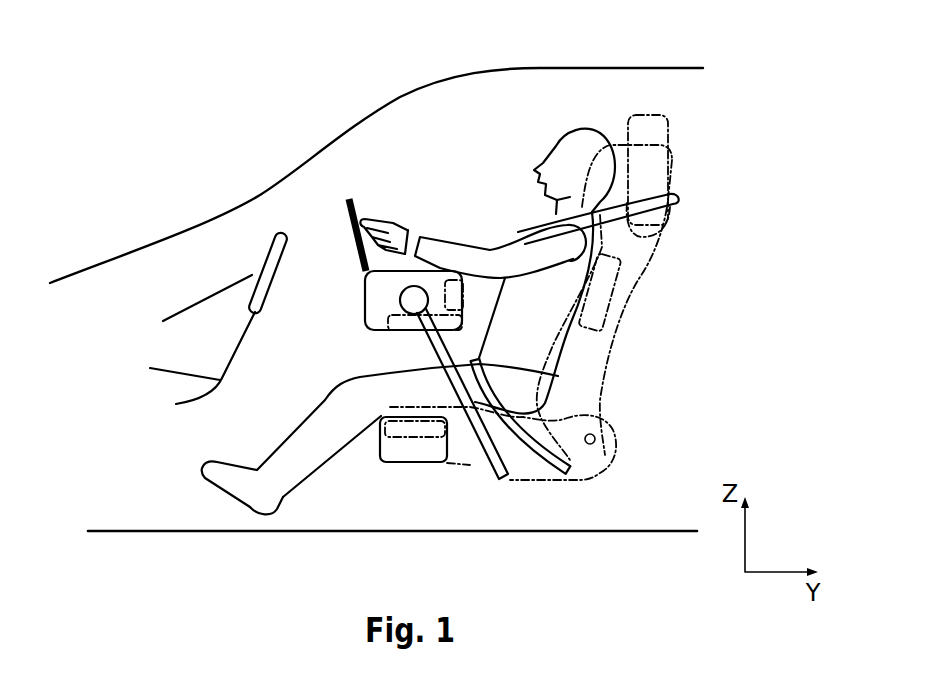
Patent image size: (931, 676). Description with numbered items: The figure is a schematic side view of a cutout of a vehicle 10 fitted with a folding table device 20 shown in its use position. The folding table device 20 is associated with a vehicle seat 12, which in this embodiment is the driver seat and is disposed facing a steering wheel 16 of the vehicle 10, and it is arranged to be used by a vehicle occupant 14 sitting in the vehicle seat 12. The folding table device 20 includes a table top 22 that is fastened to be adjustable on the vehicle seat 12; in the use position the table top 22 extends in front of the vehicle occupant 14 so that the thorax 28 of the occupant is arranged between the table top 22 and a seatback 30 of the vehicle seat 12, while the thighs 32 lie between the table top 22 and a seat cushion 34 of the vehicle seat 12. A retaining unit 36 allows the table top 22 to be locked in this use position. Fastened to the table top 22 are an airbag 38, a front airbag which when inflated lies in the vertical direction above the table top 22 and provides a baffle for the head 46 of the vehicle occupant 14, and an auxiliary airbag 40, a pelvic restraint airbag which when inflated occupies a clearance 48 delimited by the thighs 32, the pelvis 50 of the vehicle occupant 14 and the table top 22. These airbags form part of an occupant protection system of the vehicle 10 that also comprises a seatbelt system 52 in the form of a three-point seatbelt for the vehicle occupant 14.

The vehicle 10 is at (283, 164).
The vehicle seat 12 is at (564, 292).
The vehicle occupant 14 is at (440, 262).
The steering wheel 16 is at (266, 250).
The folding table device 20 is at (350, 264).
The table top 22 is at (391, 278).
The thorax 28 is at (548, 305).
The seatback 30 is at (628, 260).
The thighs 32 is at (437, 393).
The seat cushion 34 is at (468, 450).
The retaining unit 36 is at (393, 335).
The airbag 38 is at (456, 285).
The auxiliary airbag 40 is at (403, 356).
The head 46 is at (565, 153).
The clearance 48 is at (392, 340).
The pelvis 50 is at (525, 383).
The seatbelt system 52 is at (620, 192).